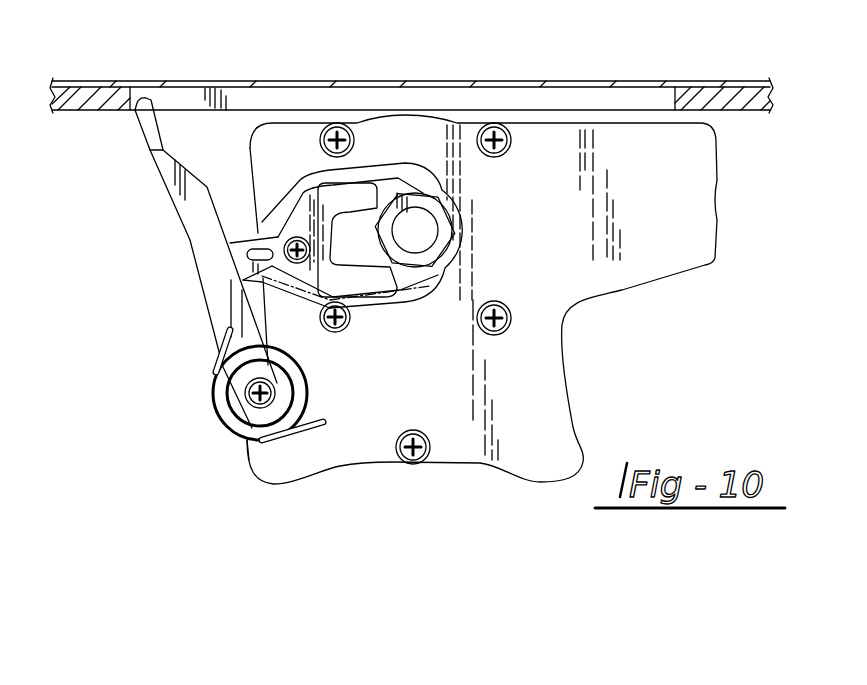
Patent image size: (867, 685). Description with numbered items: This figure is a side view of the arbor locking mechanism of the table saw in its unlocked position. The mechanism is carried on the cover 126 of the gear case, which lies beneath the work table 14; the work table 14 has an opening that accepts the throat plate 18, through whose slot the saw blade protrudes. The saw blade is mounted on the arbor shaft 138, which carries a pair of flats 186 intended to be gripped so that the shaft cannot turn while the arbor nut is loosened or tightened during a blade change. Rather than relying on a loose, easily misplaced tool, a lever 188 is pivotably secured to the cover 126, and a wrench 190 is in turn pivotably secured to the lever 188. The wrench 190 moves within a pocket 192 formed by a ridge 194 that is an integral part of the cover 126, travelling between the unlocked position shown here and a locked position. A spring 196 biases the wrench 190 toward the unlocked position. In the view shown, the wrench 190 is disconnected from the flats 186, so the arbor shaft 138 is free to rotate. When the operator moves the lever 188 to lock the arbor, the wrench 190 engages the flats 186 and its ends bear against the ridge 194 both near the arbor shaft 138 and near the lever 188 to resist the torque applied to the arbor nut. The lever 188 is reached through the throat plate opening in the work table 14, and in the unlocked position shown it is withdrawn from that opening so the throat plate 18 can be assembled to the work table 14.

The work table 14 is at (752, 105).
The throat plate 18 is at (558, 80).
The cover 126 is at (690, 236).
The arbor shaft 138 is at (420, 217).
The flats 186 is at (407, 193).
The lever 188 is at (187, 203).
The wrench 190 is at (353, 282).
The pocket 192 is at (450, 278).
The ridge 194 is at (404, 298).
The spring 196 is at (213, 403).